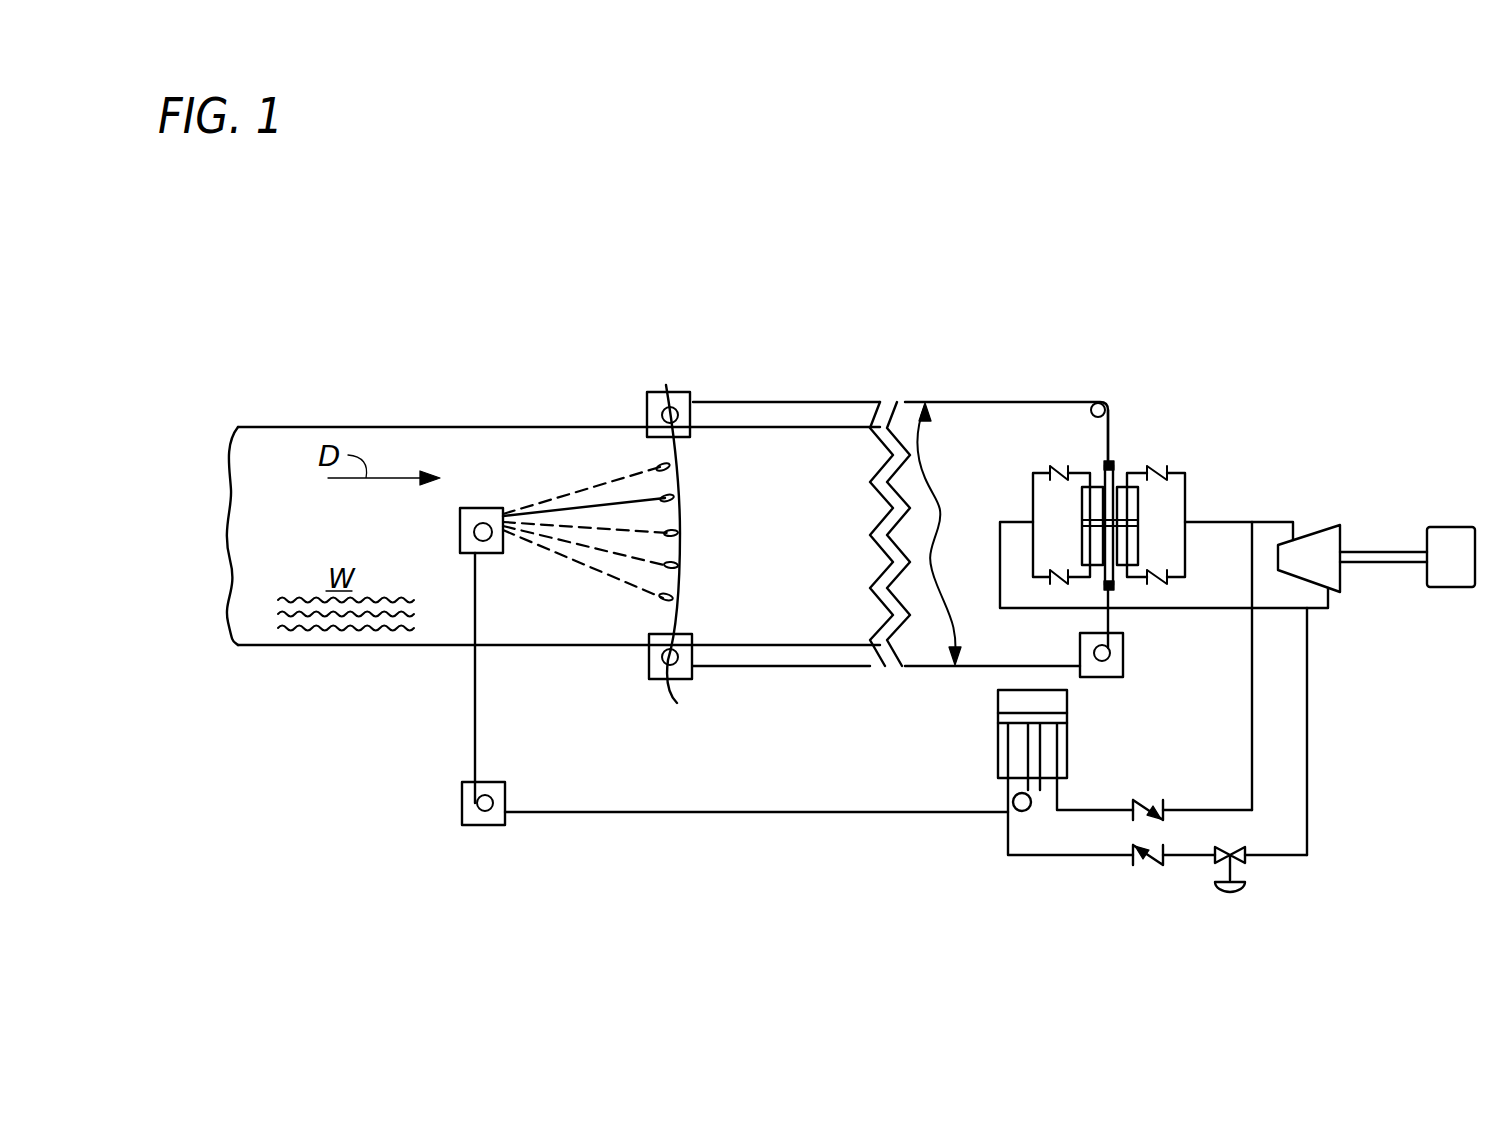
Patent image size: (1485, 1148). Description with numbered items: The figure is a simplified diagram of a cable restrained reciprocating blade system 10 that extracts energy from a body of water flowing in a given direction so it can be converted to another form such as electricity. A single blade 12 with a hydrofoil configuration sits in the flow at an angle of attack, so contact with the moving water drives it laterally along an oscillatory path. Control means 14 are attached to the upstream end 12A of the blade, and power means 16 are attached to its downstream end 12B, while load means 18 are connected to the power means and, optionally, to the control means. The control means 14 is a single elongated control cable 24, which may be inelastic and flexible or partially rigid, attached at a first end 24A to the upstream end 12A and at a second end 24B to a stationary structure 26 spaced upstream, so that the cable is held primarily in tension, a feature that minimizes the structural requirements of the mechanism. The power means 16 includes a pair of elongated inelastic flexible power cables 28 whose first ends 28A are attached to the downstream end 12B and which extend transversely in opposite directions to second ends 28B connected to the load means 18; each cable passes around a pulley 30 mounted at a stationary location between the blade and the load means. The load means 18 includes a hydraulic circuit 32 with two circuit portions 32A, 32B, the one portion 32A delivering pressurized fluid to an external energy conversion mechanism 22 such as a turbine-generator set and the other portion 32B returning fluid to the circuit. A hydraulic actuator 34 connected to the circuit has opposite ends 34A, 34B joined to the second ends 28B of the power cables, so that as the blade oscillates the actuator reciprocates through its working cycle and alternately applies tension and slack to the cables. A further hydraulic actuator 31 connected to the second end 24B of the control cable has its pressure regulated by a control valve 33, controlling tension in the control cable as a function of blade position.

The reciprocating blade system 10 is at (1178, 398).
The blade 12 is at (553, 544).
The upstream end of the blade 12A is at (665, 505).
The downstream end of the blade 12B is at (688, 500).
The control means 14 is at (515, 472).
The power means 16 is at (948, 534).
The load means 18 is at (1163, 580).
The external energy conversion mechanism 22 is at (1384, 525).
The control cable 24 is at (581, 509).
The first end of the control cable 24A is at (660, 498).
The second end of the control cable 24B is at (540, 545).
The stationary structure 26 is at (480, 508).
The power cables 28 is at (932, 509).
The first ends of the power cables 28A is at (678, 490).
The second ends of the power cables 28B is at (1110, 458).
The pulleys 30 is at (460, 522).
The hydraulic actuator 31 is at (998, 740).
The hydraulic circuit 32 is at (1163, 444).
The circuit portion 32A is at (1187, 500).
The circuit portion 32B is at (1032, 502).
The control valve 33 is at (1243, 857).
The hydraulic actuator 34 is at (1111, 527).
The end of the hydraulic actuator 34A is at (1103, 464).
The end of the hydraulic actuator 34B is at (1114, 590).